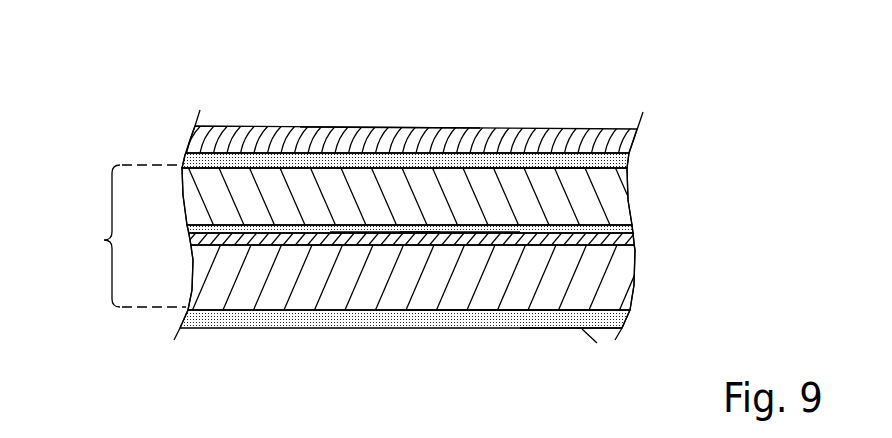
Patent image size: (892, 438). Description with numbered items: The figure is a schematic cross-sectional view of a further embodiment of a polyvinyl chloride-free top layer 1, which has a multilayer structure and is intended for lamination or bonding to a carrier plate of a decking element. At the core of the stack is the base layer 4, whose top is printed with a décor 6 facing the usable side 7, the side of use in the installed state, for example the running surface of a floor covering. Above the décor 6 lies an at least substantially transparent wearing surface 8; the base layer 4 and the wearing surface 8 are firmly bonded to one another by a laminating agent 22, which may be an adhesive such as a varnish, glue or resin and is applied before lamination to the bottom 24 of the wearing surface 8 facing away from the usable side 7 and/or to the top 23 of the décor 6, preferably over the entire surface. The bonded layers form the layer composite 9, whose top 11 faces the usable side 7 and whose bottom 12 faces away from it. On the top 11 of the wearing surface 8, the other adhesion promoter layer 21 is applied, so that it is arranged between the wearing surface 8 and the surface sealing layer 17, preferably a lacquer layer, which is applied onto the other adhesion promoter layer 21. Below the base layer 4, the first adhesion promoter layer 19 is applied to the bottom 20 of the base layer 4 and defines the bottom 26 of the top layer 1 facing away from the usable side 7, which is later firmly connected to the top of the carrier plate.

The top layer 1 is at (766, 77).
The base layer 4 is at (590, 277).
The décor 6 is at (618, 242).
The usable side 7 is at (390, 128).
The wearing surface 8 is at (590, 185).
The layer composite 9 is at (104, 240).
The top of the layer composite 11 is at (538, 168).
The bottom of the layer composite 12 is at (537, 310).
The surface sealing layer 17 is at (628, 140).
The first adhesion promoter layer 19 is at (630, 318).
The bottom of the base layer 20 is at (462, 310).
The other adhesion promoter layer 21 is at (630, 158).
The laminating agent 22 is at (635, 222).
The top of the décor 23 is at (462, 232).
The bottom of the wearing surface 24 is at (385, 230).
The bottom of the top layer 26 is at (580, 328).